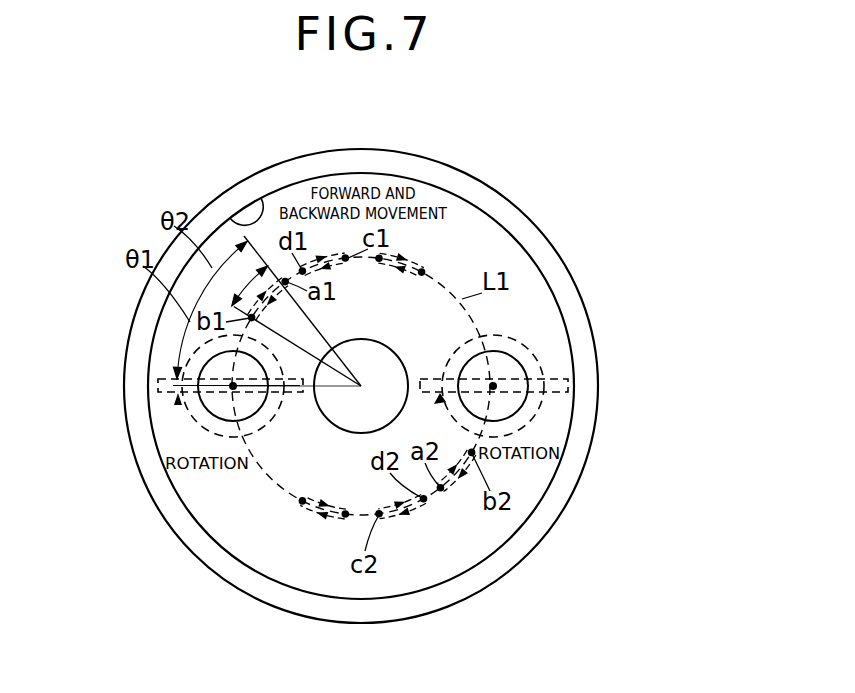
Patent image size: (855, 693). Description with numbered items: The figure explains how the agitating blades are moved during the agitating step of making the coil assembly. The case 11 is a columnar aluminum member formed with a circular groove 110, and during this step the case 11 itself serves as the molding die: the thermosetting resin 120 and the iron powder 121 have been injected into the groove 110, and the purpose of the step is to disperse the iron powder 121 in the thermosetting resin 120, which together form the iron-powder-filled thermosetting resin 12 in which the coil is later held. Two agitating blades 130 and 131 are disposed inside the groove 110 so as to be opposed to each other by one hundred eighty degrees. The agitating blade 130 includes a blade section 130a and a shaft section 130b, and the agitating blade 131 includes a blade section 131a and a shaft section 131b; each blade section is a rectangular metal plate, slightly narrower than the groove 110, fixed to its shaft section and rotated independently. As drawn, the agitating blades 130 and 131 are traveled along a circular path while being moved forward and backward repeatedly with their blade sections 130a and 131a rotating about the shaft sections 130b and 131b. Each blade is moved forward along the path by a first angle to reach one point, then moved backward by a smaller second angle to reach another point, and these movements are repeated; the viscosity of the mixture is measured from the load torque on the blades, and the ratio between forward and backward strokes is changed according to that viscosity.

The case 11 is at (368, 148).
The thermosetting resin 12 is at (303, 400).
The thermosetting resin 120 is at (303, 400).
The iron powder 121 is at (207, 503).
The circular groove 110 is at (230, 218).
The agitating blade 130 is at (165, 406).
The blade section 130a is at (160, 389).
The shaft section 130b is at (220, 398).
The agitating blade 131 is at (557, 357).
The blade section 131a is at (550, 393).
The shaft section 131b is at (502, 368).